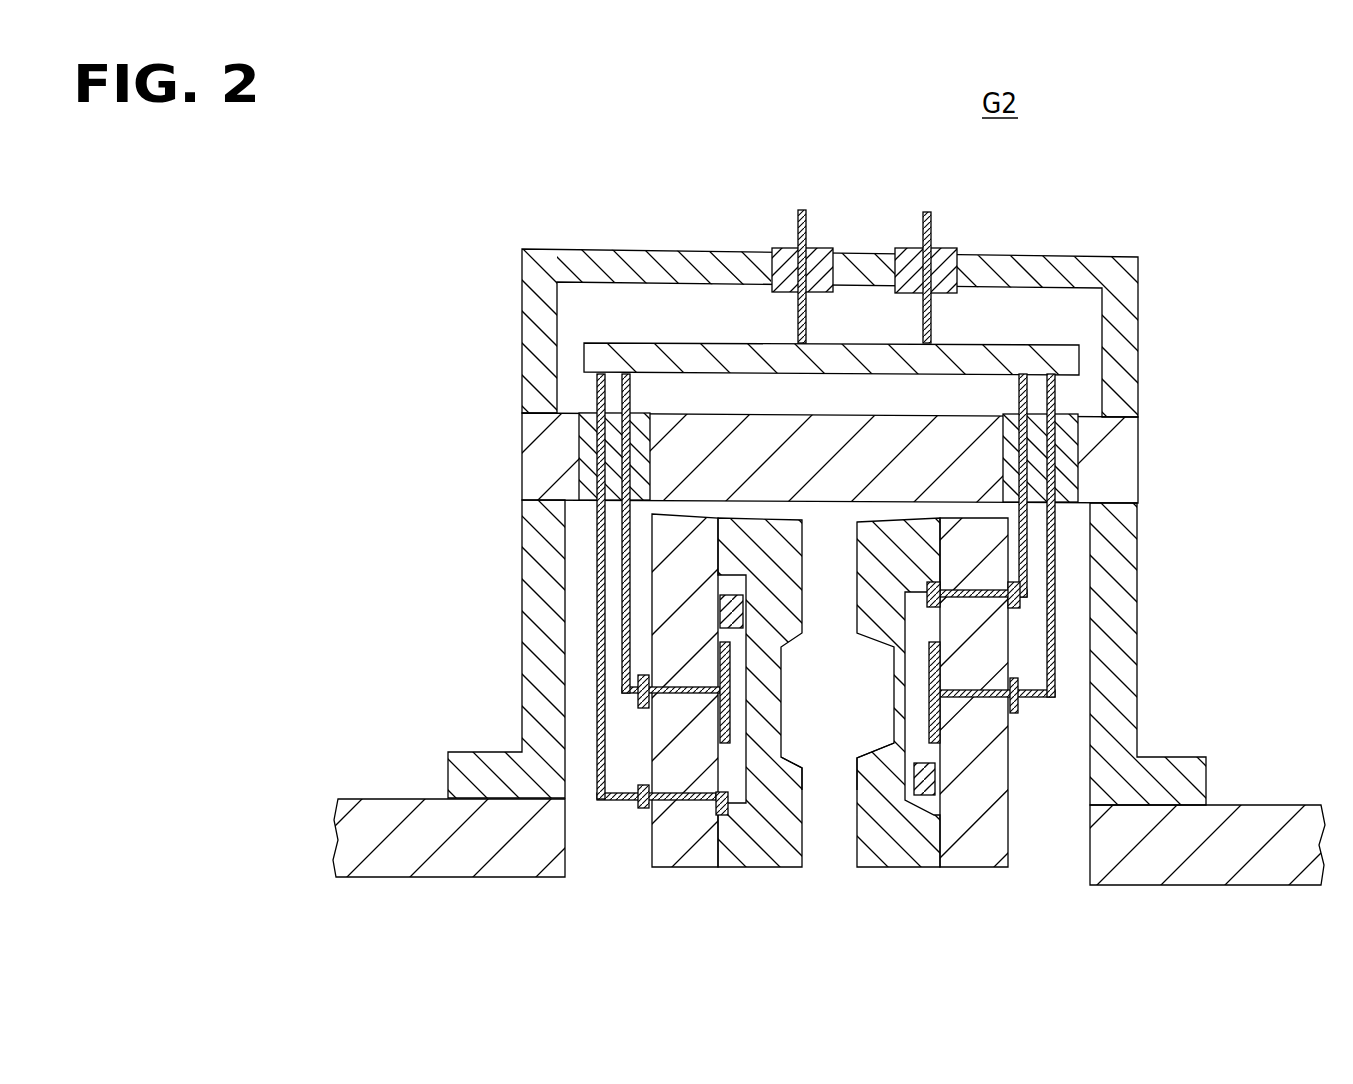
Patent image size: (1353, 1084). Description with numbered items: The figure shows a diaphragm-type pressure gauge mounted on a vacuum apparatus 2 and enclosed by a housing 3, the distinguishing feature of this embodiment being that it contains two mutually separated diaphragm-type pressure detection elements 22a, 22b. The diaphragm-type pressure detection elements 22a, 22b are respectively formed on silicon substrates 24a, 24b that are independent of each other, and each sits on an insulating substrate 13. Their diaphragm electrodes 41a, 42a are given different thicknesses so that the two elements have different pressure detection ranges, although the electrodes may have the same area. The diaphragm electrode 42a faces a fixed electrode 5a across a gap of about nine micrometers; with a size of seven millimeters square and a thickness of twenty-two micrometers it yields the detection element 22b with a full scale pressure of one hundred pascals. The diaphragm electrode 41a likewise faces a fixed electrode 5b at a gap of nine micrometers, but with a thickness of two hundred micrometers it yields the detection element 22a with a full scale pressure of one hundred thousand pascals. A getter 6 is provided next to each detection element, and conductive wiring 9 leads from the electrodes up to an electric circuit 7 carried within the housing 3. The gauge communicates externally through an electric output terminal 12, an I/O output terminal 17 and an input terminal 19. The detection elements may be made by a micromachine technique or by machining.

The vacuum apparatus 2 is at (437, 878).
The housing 3 is at (1127, 612).
The fixed electrode 5a is at (725, 665).
The fixed electrode 5b is at (935, 668).
The getter 6 is at (727, 607).
The electric circuit 7 is at (1025, 355).
The conductive wiring 9 is at (597, 532).
The electric output terminal 12 is at (797, 226).
The insulating substrate 13 is at (655, 855).
The I/O output terminal 17 is at (931, 226).
The input terminal 19 is at (1127, 445).
The diaphragm-type pressure detection element 22a is at (752, 720).
The diaphragm-type pressure detection element 22b is at (911, 723).
The silicon substrate 24a is at (815, 798).
The silicon substrate 24b is at (858, 783).
The diaphragm electrode 41a is at (772, 662).
The diaphragm electrode 42a is at (900, 692).